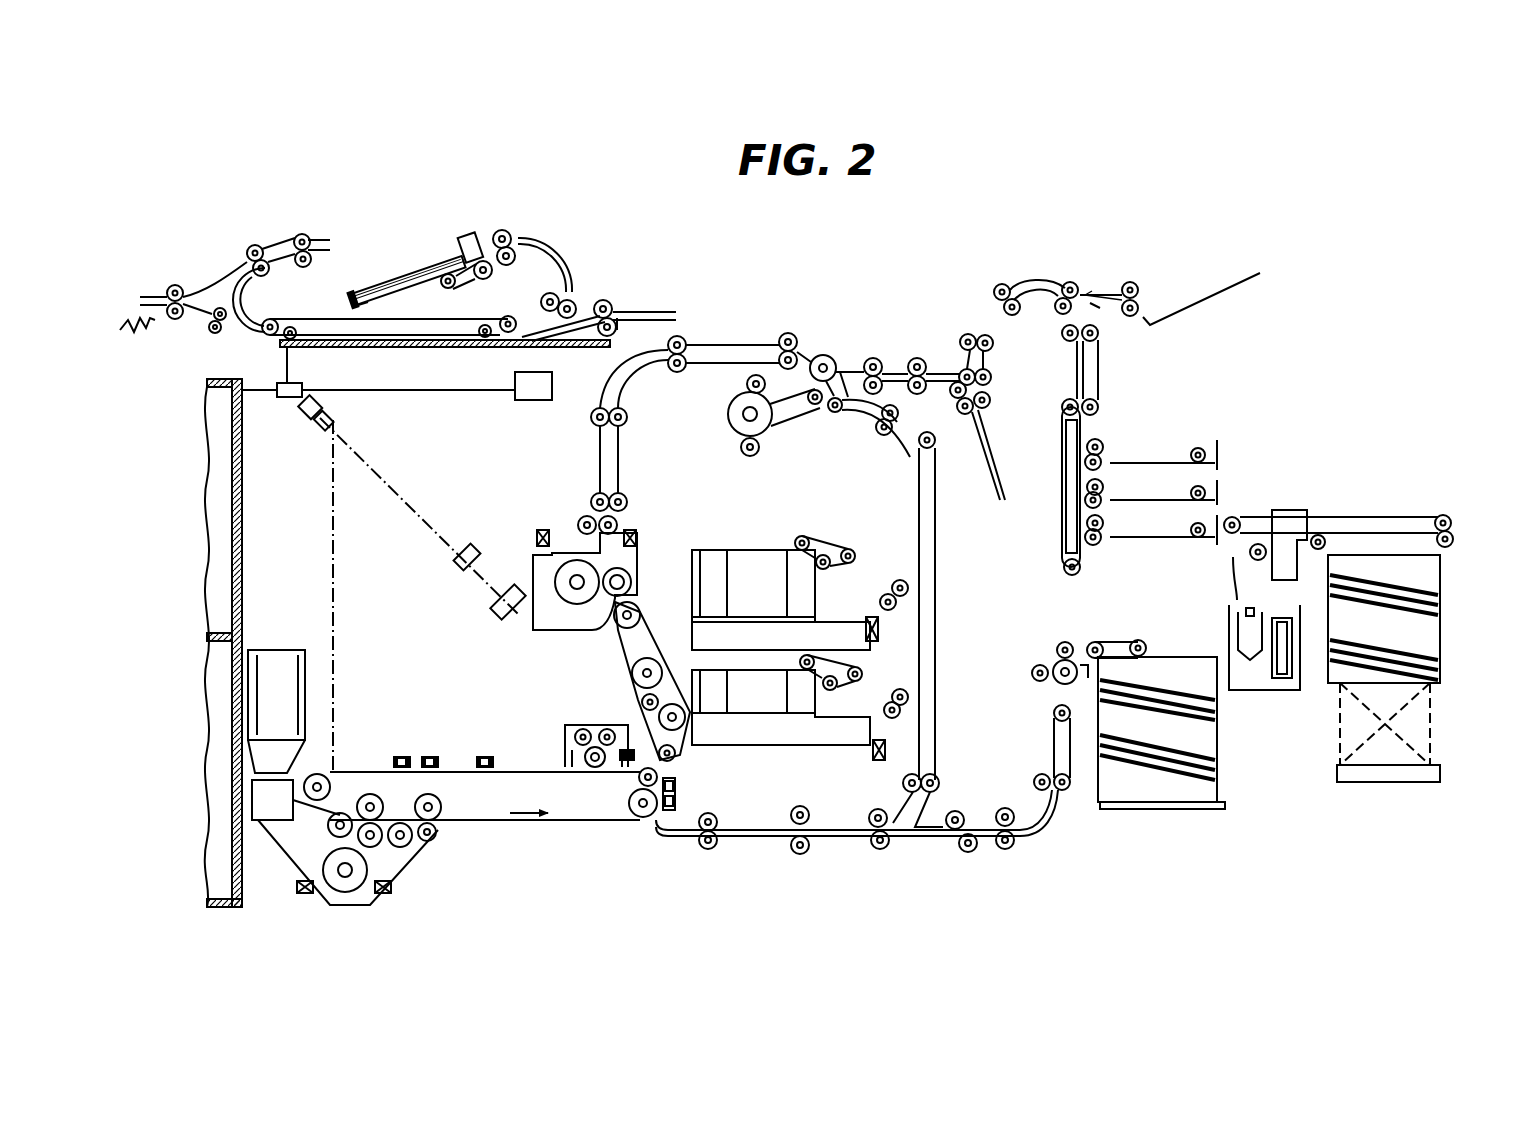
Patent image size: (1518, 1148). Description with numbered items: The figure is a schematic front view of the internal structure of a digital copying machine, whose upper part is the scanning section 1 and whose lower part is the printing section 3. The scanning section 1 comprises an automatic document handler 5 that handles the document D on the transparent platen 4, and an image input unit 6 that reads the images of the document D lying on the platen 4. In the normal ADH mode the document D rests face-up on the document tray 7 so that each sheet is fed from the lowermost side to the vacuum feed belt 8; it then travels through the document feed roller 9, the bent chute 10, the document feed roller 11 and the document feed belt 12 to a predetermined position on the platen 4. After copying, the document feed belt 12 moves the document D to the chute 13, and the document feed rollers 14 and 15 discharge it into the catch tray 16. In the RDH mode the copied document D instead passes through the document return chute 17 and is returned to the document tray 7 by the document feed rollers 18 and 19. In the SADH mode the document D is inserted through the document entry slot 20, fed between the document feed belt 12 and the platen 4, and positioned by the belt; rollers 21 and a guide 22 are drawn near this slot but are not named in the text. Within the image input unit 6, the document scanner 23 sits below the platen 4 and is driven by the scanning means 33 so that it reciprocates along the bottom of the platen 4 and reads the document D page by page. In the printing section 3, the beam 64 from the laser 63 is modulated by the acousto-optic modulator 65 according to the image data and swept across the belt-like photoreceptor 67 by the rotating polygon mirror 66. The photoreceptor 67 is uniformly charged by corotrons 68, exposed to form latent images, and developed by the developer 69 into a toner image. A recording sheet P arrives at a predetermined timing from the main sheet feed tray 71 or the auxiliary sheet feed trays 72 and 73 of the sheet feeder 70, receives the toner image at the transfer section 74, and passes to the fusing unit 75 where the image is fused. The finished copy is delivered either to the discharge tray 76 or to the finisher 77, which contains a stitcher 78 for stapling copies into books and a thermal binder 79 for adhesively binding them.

The scanning section 1 is at (378, 215).
The printing section 3 is at (410, 618).
The transparent platen 4 is at (428, 348).
The automatic document handler 5 is at (418, 252).
The image input unit 6 is at (385, 384).
The document tray 7 is at (362, 300).
The vacuum feed belt 8 is at (488, 278).
The document feed roller 9 is at (510, 234).
The bent chute 10 is at (545, 242).
The document feed roller 11 is at (568, 296).
The document feed belt 12 is at (400, 317).
The chute 13 is at (200, 318).
The document feed roller 14 is at (216, 333).
The document feed roller 15 is at (174, 284).
The catch tray 16 is at (145, 330).
The document return chute 17 is at (235, 290).
The document feed roller 18 is at (252, 246).
The document feed roller 19 is at (302, 234).
The document entry slot 20 is at (634, 302).
The roller pair 21 is at (606, 300).
The guide 22 is at (586, 340).
The document scanner 23 is at (280, 382).
The scanning means 33 is at (540, 400).
The laser 63 is at (506, 613).
The beam 64 is at (420, 500).
The acousto-optic modulator 65 is at (476, 551).
The rotating polygon mirror 66 is at (332, 416).
The belt-like photoreceptor 67 is at (522, 770).
The corotrons 68 is at (485, 755).
The developer 69 is at (420, 855).
The sheet feeder 70 is at (1000, 722).
The main sheet feed tray 71 is at (1152, 808).
The auxiliary sheet feed tray 72 is at (762, 550).
The auxiliary sheet feed tray 73 is at (770, 745).
The transfer section 74 is at (644, 835).
The fusing unit 75 is at (658, 570).
The discharge tray 76 is at (1216, 298).
The finisher 77 is at (1280, 452).
The stitcher 78 is at (1220, 470).
The thermal binder 79 is at (1385, 518).
The recording sheet P is at (1205, 775).
The document D is at (388, 252).